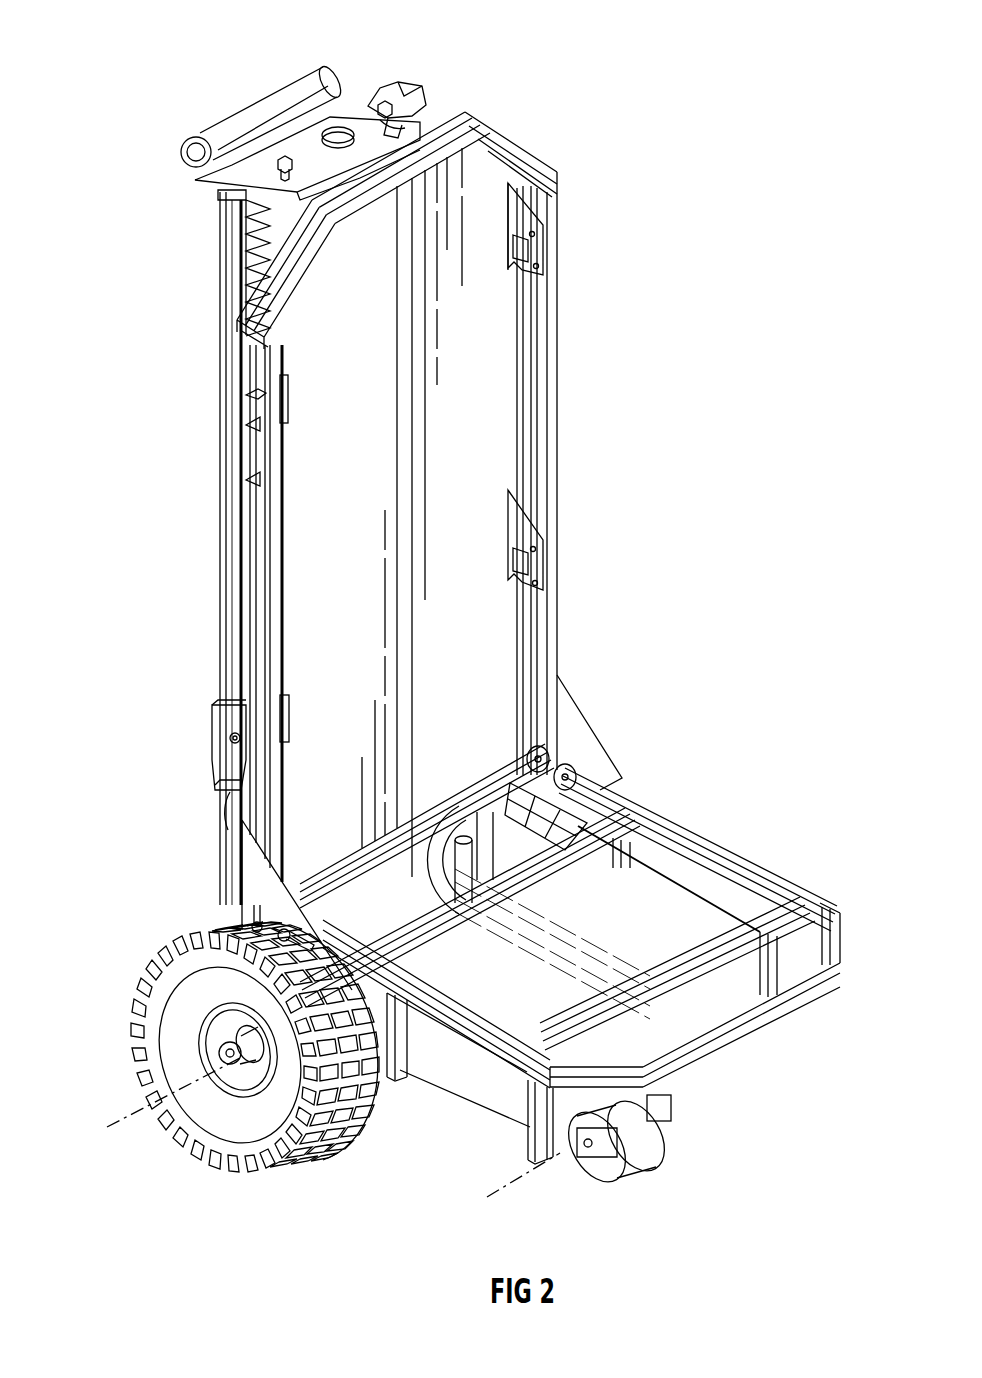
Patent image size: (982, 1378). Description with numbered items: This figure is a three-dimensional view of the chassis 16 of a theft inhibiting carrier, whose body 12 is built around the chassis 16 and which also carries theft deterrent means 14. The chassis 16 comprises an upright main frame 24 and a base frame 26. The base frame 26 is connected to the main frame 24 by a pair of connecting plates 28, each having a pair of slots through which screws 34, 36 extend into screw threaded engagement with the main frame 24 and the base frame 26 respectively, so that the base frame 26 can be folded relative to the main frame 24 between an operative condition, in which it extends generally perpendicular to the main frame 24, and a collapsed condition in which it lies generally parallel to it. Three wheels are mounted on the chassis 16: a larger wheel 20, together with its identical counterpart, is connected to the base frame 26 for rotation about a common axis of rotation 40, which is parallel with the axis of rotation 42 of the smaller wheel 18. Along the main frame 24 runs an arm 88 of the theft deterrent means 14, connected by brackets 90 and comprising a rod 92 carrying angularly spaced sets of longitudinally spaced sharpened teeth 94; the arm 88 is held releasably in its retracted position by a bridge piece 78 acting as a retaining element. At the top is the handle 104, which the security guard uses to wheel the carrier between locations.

The body 12 is at (690, 282).
The theft deterrent means 14 is at (160, 869).
The chassis 16 is at (586, 196).
The wheel 18 is at (642, 1142).
The wheel 20 is at (268, 1147).
The main frame 24 is at (588, 456).
The base frame 26 is at (711, 821).
The connecting plate 28 is at (572, 739).
The screw 34 is at (257, 925).
The screw 36 is at (312, 926).
The axis of rotation 40 is at (150, 1118).
The axis of rotation 42 is at (540, 1178).
The bridge piece 78 is at (392, 100).
The arm 88 is at (207, 445).
The bracket 90 is at (197, 766).
The rod 92 is at (220, 235).
The sharpened teeth 94 is at (292, 262).
The handle 104 is at (277, 117).